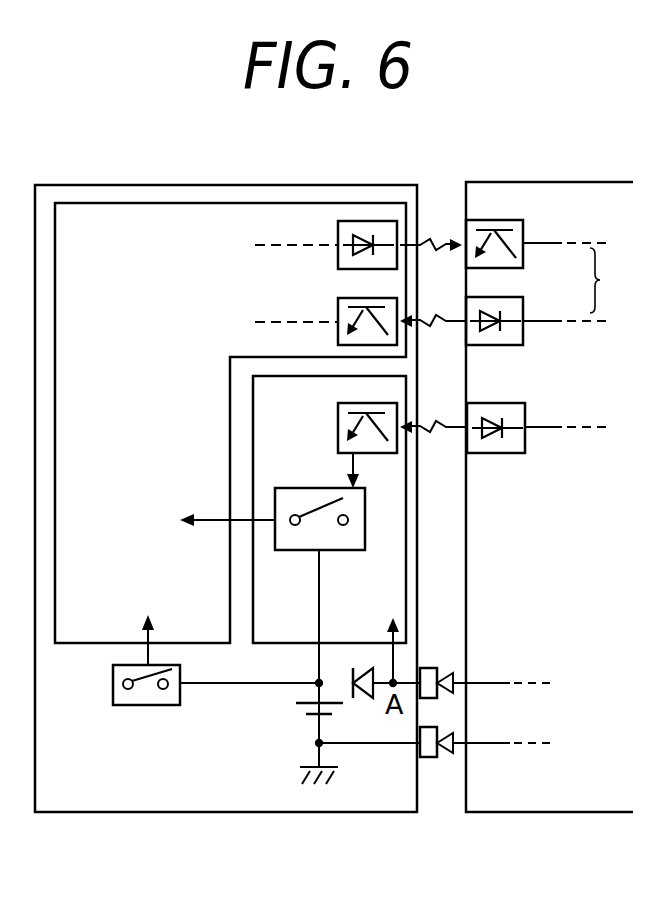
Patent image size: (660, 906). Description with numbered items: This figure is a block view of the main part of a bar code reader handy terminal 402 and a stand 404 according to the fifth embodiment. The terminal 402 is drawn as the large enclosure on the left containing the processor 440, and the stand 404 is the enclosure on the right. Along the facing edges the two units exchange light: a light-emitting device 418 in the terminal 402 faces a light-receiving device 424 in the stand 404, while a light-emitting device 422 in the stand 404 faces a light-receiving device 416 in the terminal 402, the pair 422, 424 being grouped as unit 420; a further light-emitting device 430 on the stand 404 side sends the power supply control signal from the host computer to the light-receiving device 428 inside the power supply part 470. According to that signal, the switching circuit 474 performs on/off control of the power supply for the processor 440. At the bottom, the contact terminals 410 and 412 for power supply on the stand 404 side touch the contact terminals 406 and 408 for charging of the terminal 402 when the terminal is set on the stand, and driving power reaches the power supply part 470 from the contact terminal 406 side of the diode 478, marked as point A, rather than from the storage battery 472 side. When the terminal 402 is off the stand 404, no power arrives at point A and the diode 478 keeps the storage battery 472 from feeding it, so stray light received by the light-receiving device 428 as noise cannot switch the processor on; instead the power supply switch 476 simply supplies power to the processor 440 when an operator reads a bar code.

The bar code reader handy terminal 402 is at (193, 185).
The stand 404 is at (549, 183).
The contact terminal for charging 406 is at (426, 668).
The contact terminal for charging 408 is at (430, 758).
The contact terminal for power supply 410 is at (456, 678).
The contact terminal for power supply 412 is at (456, 738).
The light receiving element 416 is at (338, 312).
The light emitting element 418 is at (368, 221).
The lens-side communication unit 420 is at (625, 280).
The light emitting element 422 is at (525, 312).
The light receiving element 424 is at (525, 250).
The light-receiving device 428 is at (338, 415).
The light-emitting device 430 is at (527, 416).
The processor 440 is at (271, 201).
The power supply part 470 is at (404, 510).
The storage battery 472 is at (302, 706).
The switching circuit 474 is at (299, 488).
The power supply switch 476 is at (143, 706).
The diode 478 is at (357, 700).